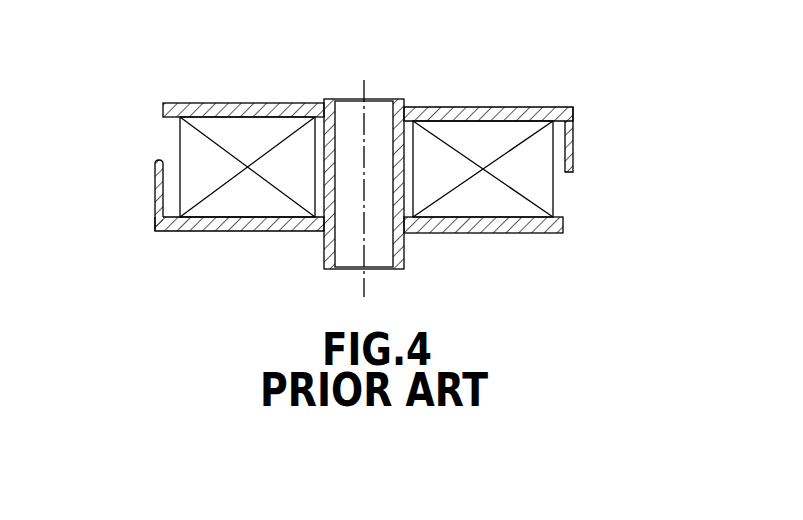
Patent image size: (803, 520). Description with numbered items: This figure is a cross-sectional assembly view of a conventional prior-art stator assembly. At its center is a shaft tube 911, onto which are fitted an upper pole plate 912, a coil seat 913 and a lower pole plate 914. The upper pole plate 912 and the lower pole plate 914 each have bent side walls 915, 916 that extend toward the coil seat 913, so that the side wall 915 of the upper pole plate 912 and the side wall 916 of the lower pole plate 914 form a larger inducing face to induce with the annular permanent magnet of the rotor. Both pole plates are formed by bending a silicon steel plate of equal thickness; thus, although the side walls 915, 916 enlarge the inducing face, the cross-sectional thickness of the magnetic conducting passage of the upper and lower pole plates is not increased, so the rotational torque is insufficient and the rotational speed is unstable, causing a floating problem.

The shaft tube 911 is at (407, 101).
The upper pole plate 912 is at (543, 106).
The coil seat 913 is at (553, 197).
The lower pole plate 914 is at (242, 232).
The bent side wall 915 is at (575, 143).
The bent side wall 916 is at (155, 198).